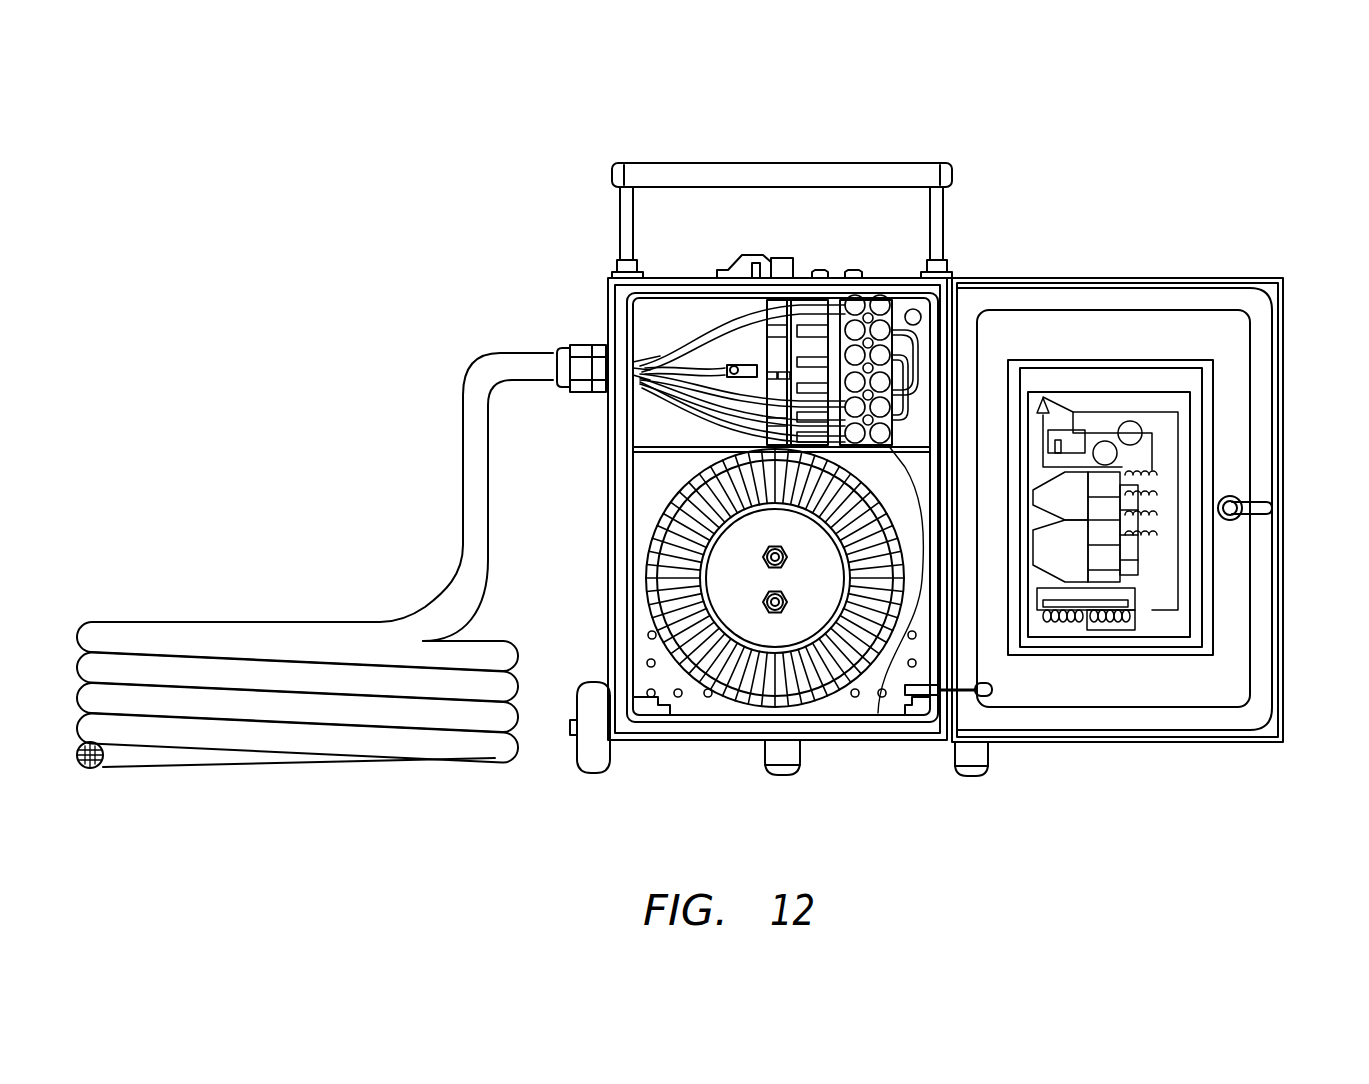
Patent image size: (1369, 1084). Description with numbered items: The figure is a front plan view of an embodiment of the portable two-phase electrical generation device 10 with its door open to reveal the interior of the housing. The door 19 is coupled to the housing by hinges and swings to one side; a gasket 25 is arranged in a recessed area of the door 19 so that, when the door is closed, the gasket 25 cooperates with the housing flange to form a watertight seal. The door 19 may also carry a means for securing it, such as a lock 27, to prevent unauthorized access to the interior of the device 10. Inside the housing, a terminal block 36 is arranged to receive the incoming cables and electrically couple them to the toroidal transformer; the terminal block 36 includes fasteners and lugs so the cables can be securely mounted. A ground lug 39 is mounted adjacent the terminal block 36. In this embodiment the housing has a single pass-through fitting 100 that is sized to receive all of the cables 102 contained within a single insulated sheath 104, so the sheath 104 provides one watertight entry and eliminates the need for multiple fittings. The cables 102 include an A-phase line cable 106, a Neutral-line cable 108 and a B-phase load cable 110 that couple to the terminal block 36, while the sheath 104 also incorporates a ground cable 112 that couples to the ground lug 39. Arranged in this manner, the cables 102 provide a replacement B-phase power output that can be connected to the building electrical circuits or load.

The portable two-phase electrical generation device 10 is at (1199, 160).
The door member 19 is at (1183, 277).
The gasket 25 is at (1128, 722).
The lock 27 is at (1275, 506).
The terminal block 36 is at (923, 373).
The ground lug 39 is at (731, 364).
The single pass-through fitting 100 is at (582, 343).
The cables 102 is at (91, 768).
The insulated sheath 104 is at (462, 500).
The A-phase line cable 106 is at (700, 412).
The Neutral-line cable 108 is at (693, 403).
The B-phase load cable 110 is at (703, 325).
The ground cable 112 is at (678, 363).